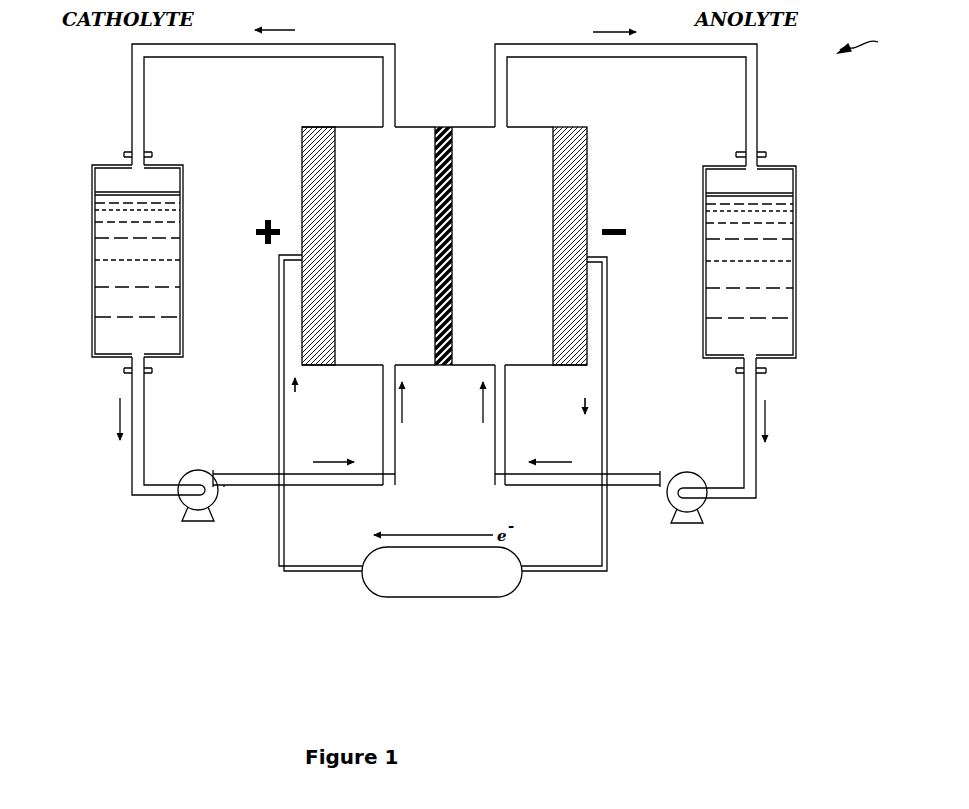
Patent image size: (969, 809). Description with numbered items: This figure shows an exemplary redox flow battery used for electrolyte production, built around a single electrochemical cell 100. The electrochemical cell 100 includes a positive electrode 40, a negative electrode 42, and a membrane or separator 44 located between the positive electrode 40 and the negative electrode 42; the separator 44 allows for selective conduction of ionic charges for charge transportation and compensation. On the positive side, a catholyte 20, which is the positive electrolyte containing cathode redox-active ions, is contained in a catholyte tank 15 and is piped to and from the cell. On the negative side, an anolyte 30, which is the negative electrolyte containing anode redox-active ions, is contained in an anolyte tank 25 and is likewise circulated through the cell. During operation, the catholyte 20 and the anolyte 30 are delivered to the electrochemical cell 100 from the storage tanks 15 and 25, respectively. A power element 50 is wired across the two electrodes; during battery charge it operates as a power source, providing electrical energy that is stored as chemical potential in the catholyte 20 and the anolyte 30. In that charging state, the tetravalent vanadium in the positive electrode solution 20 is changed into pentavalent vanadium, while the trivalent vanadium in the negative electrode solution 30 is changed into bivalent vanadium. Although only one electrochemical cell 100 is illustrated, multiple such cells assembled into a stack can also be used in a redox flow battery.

The catholyte tank 15 is at (92, 172).
The catholyte 20 is at (97, 250).
The anolyte tank 25 is at (796, 172).
The anolyte 30 is at (796, 250).
The positive electrode 40 is at (319, 127).
The negative electrode 42 is at (566, 127).
The membrane or separator 44 is at (443, 366).
The power element 50 is at (516, 590).
The electrochemical cell 100 is at (464, 272).